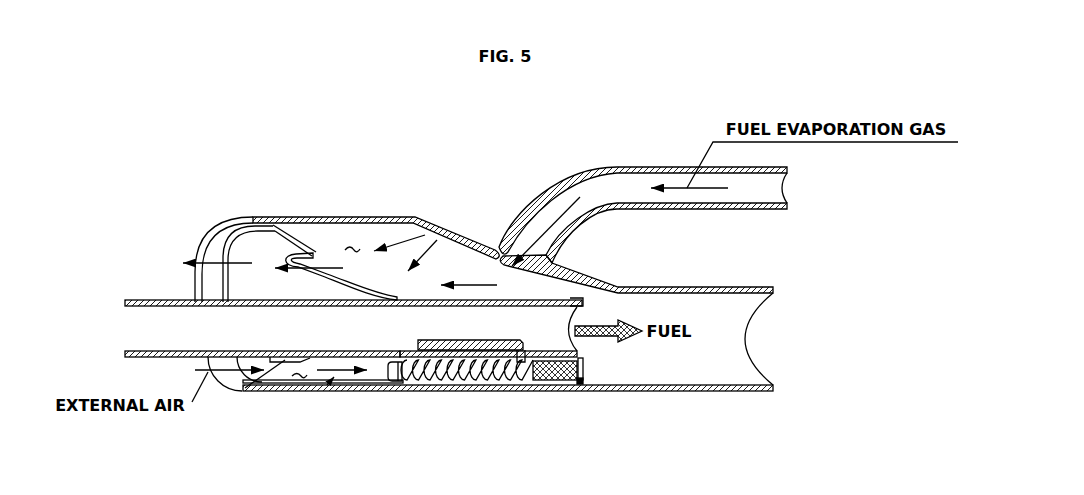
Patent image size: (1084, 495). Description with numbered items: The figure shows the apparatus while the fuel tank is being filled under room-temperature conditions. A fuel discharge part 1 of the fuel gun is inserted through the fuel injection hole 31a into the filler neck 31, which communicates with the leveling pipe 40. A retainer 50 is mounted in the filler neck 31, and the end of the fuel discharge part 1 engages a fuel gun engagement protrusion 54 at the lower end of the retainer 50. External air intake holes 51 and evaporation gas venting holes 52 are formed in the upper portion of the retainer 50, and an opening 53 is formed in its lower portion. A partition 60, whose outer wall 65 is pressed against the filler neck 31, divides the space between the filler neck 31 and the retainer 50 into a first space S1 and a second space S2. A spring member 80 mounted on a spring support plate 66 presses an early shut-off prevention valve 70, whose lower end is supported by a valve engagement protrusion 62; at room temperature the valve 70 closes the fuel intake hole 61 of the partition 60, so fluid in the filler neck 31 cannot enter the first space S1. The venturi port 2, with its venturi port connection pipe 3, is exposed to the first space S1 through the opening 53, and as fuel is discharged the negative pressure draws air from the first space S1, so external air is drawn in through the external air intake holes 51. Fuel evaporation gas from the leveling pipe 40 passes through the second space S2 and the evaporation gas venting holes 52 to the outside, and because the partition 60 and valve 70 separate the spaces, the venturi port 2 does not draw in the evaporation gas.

The fuel discharge part 1 is at (143, 302).
The filler neck 31 is at (388, 218).
The fuel injection hole 31a is at (175, 263).
The leveling pipe 40 is at (657, 167).
The retainer 50 is at (475, 288).
The evaporation gas venting holes 52 is at (313, 253).
The second space S2 is at (348, 245).
The fuel gun engagement protrusion 54 is at (572, 299).
The partition 60 is at (327, 391).
The external air intake holes 51 is at (256, 386).
The first space S1 is at (293, 381).
The outer wall 65 is at (353, 383).
The spring support plate 66 is at (392, 382).
The spring member 80 is at (470, 381).
The venturi port connection pipe 3 is at (447, 350).
The venturi port 2 is at (520, 363).
The early shut-off prevention valve 70 is at (538, 358).
The opening 53 is at (553, 381).
The fuel intake hole 61 is at (584, 376).
The valve engagement protrusion 62 is at (580, 385).